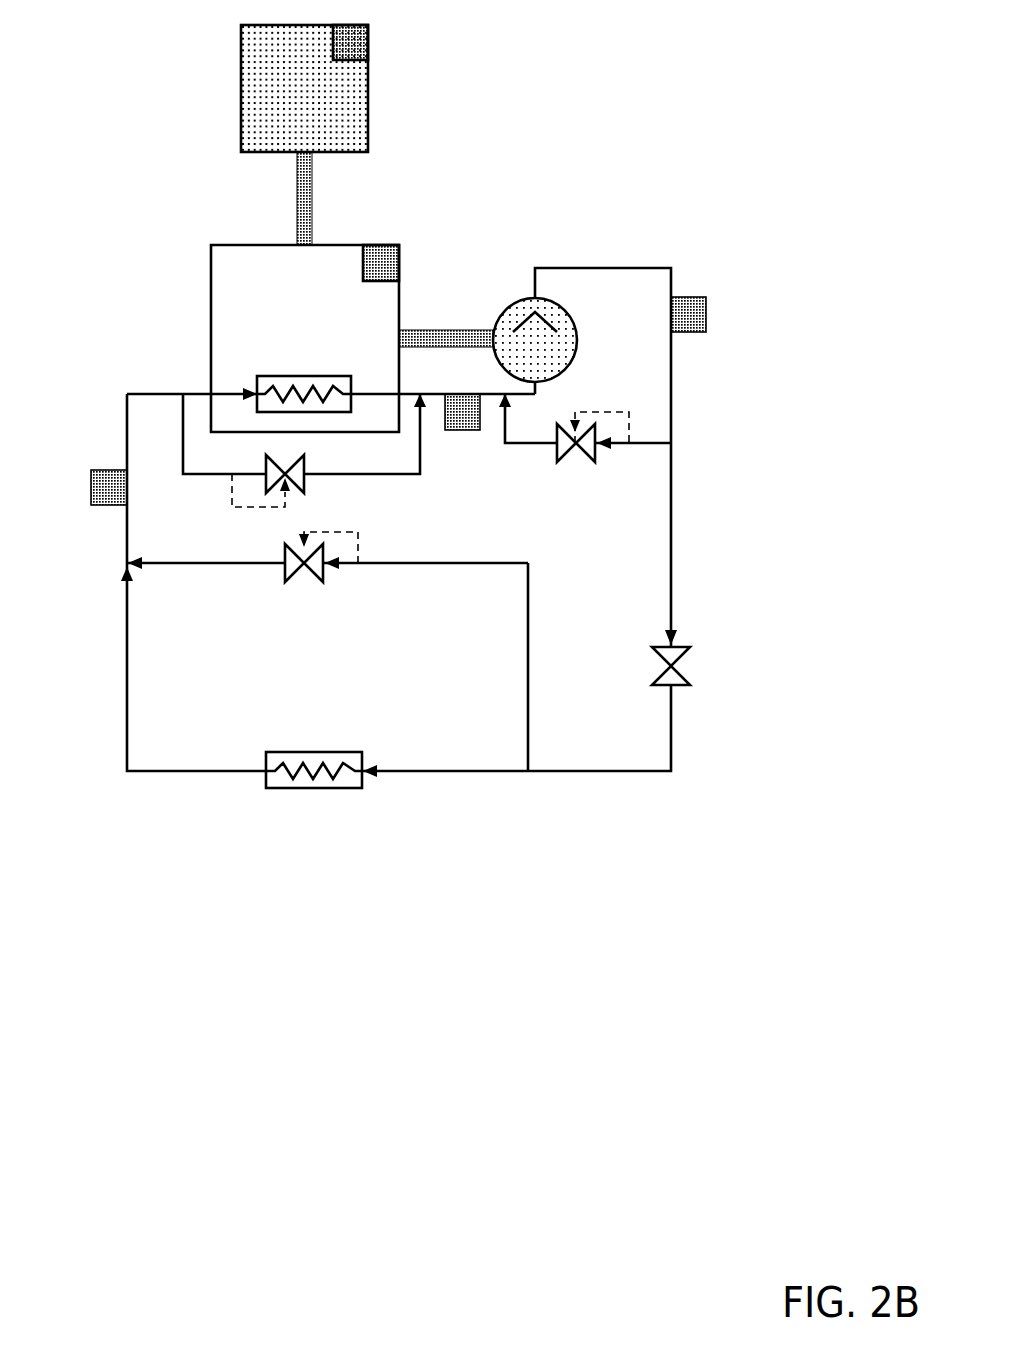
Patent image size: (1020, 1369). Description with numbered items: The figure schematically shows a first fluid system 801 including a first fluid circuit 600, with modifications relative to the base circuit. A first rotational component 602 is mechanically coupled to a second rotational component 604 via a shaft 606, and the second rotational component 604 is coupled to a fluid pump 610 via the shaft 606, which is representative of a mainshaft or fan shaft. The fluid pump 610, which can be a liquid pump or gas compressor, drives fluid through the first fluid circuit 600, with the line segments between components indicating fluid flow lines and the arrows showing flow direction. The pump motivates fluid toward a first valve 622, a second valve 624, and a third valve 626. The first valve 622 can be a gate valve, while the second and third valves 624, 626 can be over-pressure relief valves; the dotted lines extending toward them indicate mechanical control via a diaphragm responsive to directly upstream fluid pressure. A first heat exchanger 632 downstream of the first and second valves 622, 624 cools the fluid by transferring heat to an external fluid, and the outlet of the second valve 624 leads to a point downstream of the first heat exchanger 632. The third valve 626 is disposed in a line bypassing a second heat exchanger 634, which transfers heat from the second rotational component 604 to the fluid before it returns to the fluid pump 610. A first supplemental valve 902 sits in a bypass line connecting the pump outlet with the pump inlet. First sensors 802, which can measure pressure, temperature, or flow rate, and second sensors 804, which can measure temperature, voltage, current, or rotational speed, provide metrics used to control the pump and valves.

The first fluid circuit 600 is at (457, 448).
The first fluid system 801 is at (777, 258).
The first rotational component 602 is at (368, 86).
The second rotational component 604 is at (232, 245).
The shaft 606 is at (311, 198).
The fluid pump 610 is at (554, 299).
The first valve 622 is at (691, 646).
The second valve 624 is at (287, 582).
The third valve 626 is at (307, 483).
The first heat exchanger 632 is at (332, 788).
The second heat exchanger 634 is at (297, 375).
The first sensors 802 is at (91, 477).
The second sensors 804 is at (347, 43).
The first supplemental valve 902 is at (557, 463).